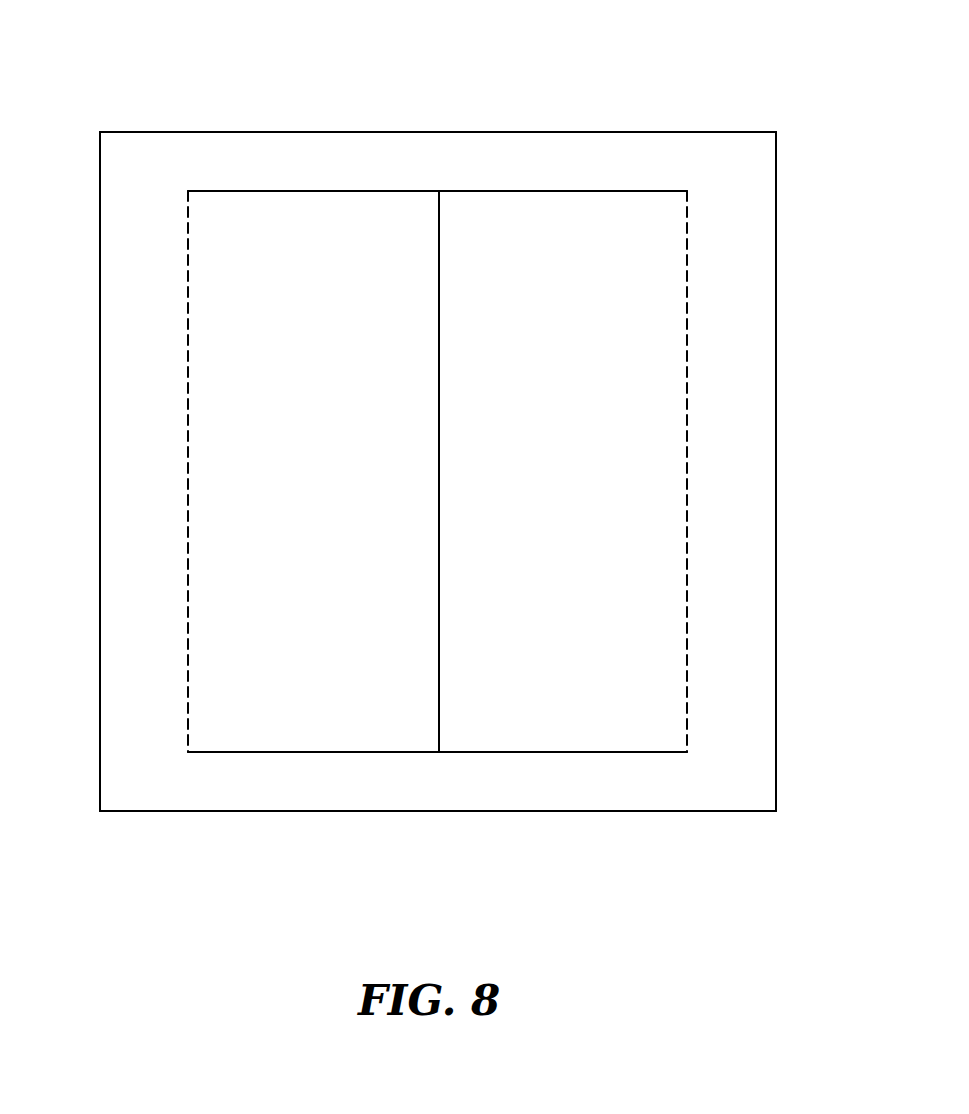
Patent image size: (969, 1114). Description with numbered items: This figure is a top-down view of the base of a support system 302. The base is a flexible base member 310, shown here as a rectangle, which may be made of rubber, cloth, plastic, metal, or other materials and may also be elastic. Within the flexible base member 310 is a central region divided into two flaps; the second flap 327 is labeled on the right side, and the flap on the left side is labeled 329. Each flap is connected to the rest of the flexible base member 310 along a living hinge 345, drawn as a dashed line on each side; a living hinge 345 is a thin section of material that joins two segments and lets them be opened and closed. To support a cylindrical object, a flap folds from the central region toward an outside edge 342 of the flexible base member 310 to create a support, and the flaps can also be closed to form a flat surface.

The support system 302 is at (790, 76).
The flexible base member 310 is at (750, 285).
The outside edge 342 is at (99, 725).
The living hinge 345 is at (186, 417).
The left flap 329 is at (207, 581).
The second flap 327 is at (666, 579).